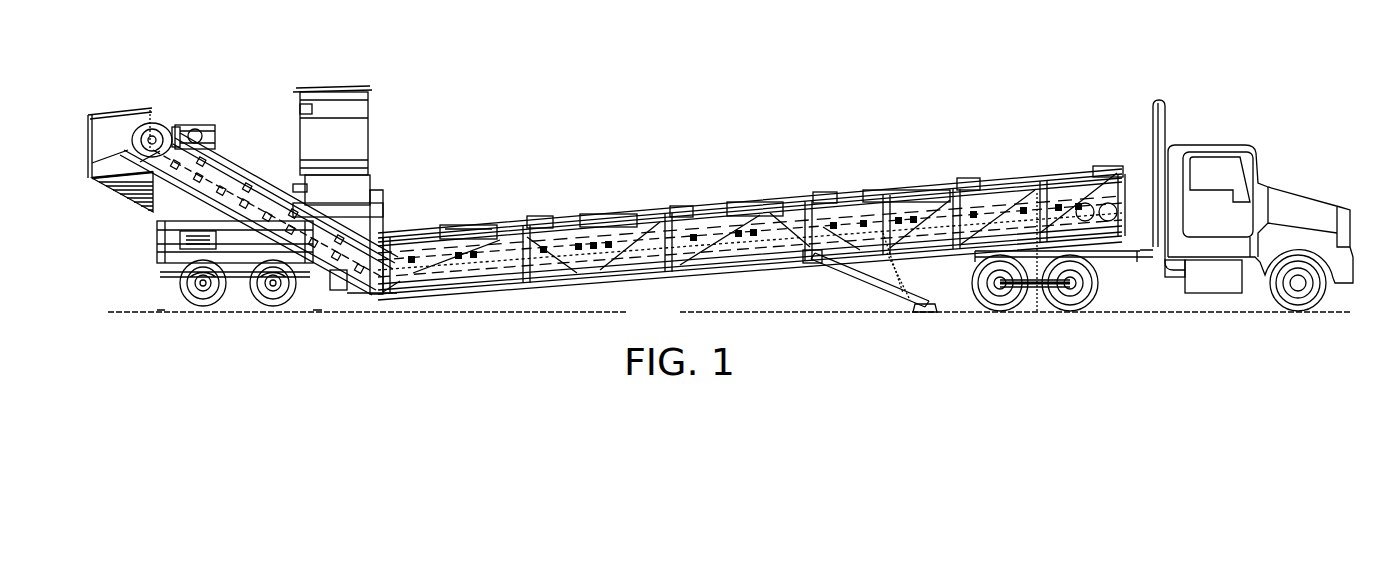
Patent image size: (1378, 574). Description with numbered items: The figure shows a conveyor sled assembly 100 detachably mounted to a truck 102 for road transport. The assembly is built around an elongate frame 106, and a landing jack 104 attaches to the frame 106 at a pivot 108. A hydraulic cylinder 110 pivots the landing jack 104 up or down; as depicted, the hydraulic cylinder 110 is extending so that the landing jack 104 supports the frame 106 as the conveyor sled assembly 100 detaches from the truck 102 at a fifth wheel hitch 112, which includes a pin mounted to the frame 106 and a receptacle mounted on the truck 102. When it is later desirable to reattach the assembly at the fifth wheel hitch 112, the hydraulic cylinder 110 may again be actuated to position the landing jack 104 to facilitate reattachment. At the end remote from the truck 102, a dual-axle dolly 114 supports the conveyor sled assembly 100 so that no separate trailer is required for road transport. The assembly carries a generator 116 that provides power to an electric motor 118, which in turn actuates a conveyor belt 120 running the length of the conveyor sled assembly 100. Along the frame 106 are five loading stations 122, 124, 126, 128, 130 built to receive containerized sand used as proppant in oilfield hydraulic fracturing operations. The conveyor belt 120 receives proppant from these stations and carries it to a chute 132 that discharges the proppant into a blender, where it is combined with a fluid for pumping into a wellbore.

The conveyor sled assembly 100 is at (983, 123).
The truck 102 is at (1222, 147).
The landing jack 104 is at (877, 290).
The elongate frame 106 is at (693, 280).
The pivot 108 is at (813, 264).
The hydraulic cylinder 110 is at (860, 190).
The fifth wheel hitch 112 is at (1090, 260).
The dual-axle dolly 114 is at (157, 267).
The generator 116 is at (362, 108).
The electric motor 118 is at (185, 125).
The conveyor belt 120 is at (227, 167).
The loading station 122 is at (480, 225).
The loading station 124 is at (607, 225).
The loading station 126 is at (763, 202).
The loading station 128 is at (837, 190).
The loading station 130 is at (1067, 178).
The chute 132 is at (139, 98).